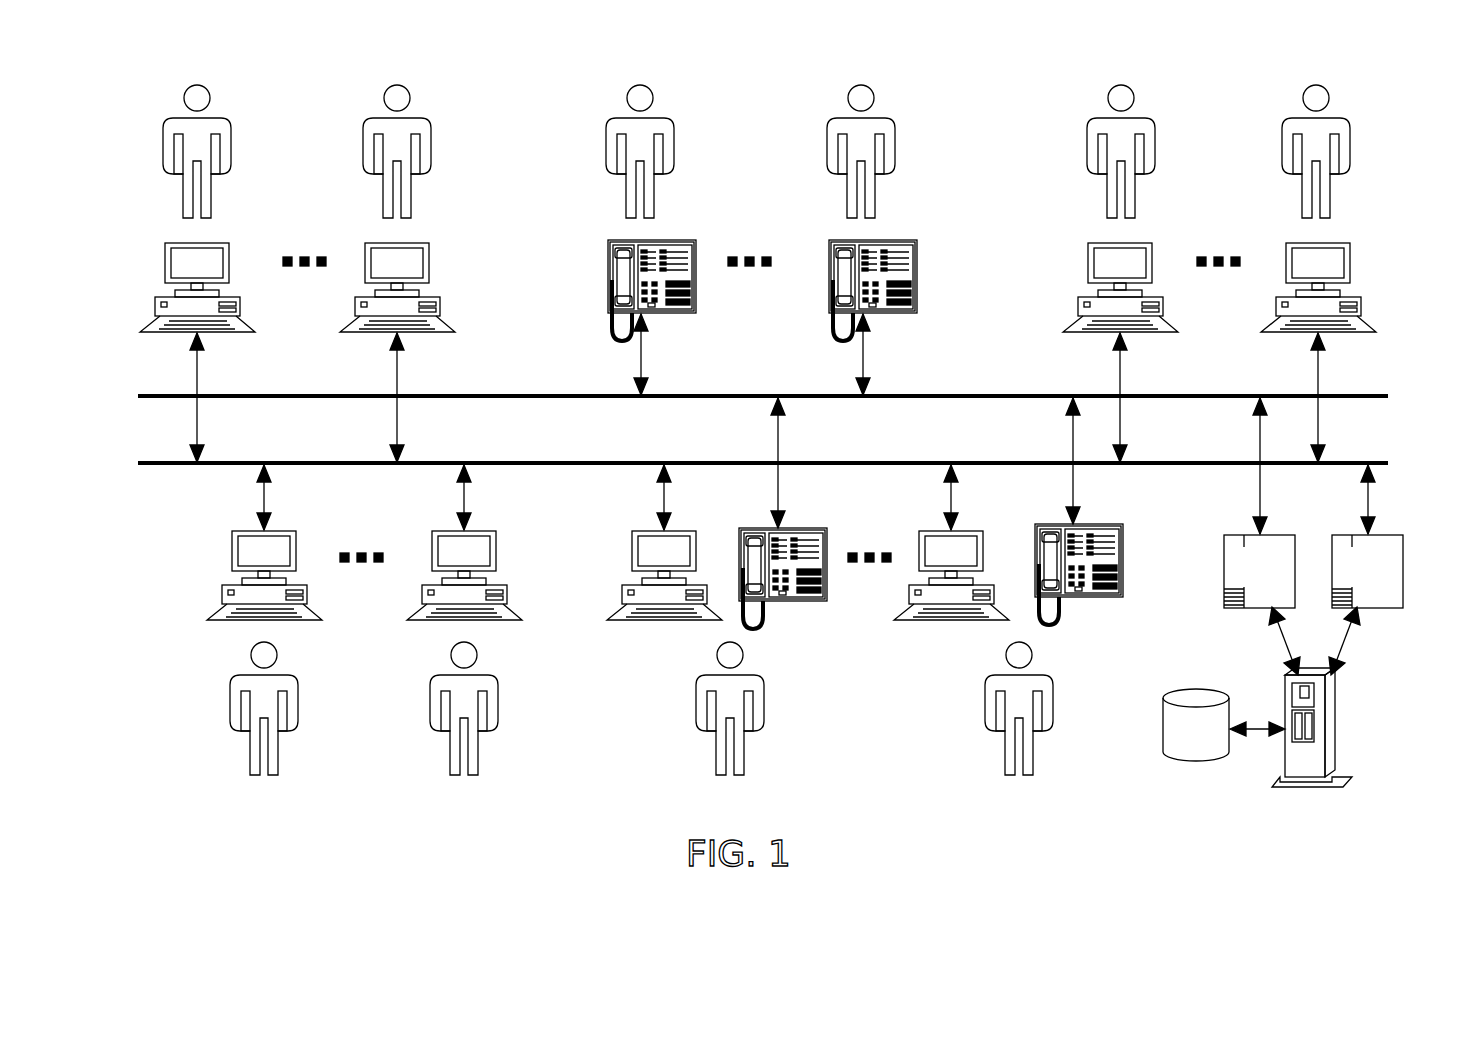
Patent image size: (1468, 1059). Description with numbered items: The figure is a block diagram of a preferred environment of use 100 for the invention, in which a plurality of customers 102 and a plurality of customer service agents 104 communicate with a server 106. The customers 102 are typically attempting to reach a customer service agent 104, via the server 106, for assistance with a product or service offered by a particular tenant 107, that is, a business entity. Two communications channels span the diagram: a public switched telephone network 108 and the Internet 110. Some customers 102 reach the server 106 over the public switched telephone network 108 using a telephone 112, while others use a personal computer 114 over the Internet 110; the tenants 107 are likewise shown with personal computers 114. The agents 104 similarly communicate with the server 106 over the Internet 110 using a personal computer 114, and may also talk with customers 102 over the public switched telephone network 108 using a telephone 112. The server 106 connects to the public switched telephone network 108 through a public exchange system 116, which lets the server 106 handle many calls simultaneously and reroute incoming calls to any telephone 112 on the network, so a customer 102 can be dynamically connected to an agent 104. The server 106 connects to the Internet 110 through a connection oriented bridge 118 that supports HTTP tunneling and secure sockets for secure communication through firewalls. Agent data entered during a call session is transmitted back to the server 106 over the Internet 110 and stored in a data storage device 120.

The communication system 100 is at (1012, 70).
The customer 102 is at (218, 117).
The customer service agent 104 is at (284, 674).
The server 106 is at (1338, 724).
The tenant 107 is at (1141, 116).
The public switched telephone network 108 is at (1387, 394).
The Internet 110 is at (1387, 461).
The telephone 112 is at (673, 240).
The personal computer 114 is at (218, 242).
The public exchange system 116 is at (1276, 534).
The connection oriented bridge 118 is at (1384, 534).
The data storage device 120 is at (1197, 689).